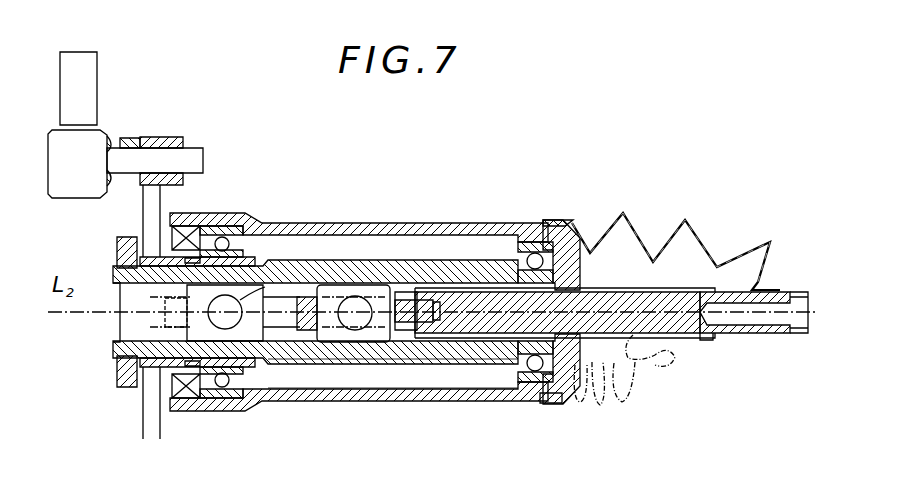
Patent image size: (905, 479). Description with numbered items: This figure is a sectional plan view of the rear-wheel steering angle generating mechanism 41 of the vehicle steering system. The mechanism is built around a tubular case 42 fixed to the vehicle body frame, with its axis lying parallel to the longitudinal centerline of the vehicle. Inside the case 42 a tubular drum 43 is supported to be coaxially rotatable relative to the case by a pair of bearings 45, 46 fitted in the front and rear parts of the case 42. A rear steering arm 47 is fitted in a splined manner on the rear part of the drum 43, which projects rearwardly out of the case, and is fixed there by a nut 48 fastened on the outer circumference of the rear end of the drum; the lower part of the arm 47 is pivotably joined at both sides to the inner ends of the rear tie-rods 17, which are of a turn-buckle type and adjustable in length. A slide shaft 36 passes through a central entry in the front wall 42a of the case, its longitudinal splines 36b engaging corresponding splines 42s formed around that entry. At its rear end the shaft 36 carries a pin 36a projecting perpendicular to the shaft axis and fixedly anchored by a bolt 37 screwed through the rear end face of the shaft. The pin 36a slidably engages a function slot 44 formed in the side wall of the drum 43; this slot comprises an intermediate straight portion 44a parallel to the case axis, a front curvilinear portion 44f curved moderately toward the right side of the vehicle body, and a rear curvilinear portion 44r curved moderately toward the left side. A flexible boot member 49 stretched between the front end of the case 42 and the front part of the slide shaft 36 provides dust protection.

The rear tie-rod 17 is at (96, 77).
The rear steering arm 47 is at (143, 213).
The nut 48 is at (117, 370).
The bearing 46 is at (220, 387).
The rear curvilinear portion 44r is at (191, 313).
The function slot 44 is at (287, 281).
The bolt 37 is at (307, 331).
The pin 36a is at (358, 298).
The longitudinal splines 36b is at (612, 288).
The slide shaft 36 is at (752, 333).
The front curvilinear portion 44f is at (493, 318).
The intermediate straight portion 44a is at (373, 343).
The tubular drum 43 is at (453, 347).
The tubular case 42 is at (376, 222).
The splines 42s is at (579, 258).
The front wall 42a is at (558, 402).
The rear-wheel steering angle generating mechanism 41 is at (470, 211).
The bearing 45 is at (527, 240).
The flexible boot member 49 is at (700, 236).